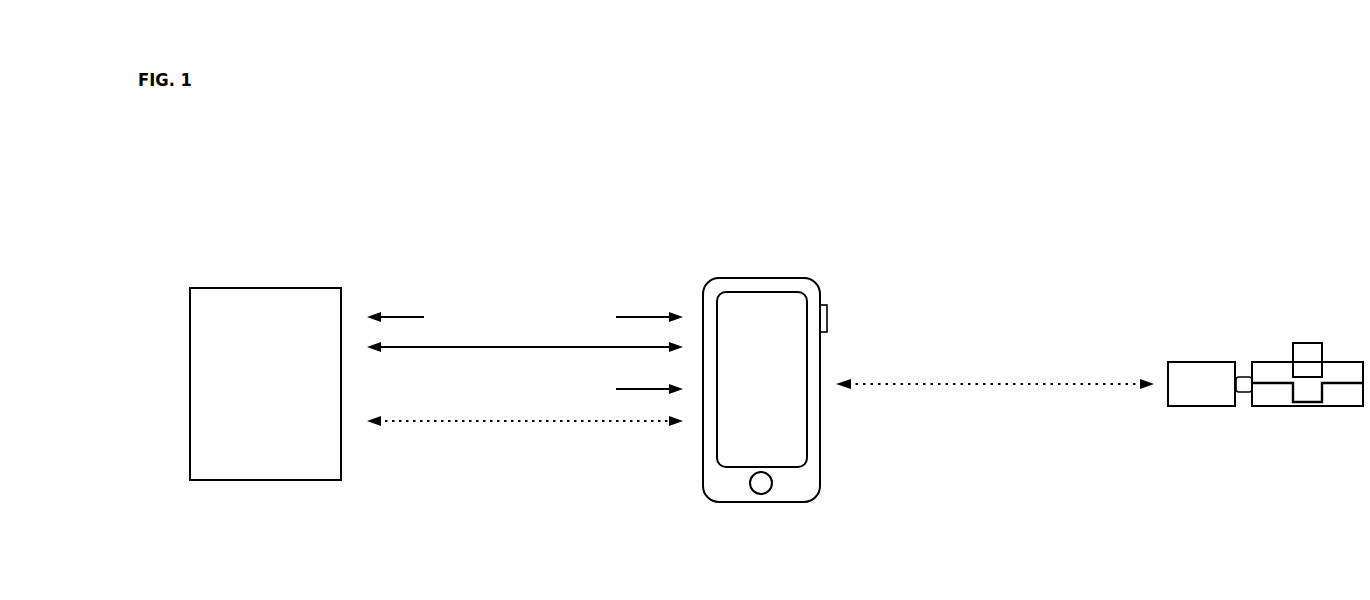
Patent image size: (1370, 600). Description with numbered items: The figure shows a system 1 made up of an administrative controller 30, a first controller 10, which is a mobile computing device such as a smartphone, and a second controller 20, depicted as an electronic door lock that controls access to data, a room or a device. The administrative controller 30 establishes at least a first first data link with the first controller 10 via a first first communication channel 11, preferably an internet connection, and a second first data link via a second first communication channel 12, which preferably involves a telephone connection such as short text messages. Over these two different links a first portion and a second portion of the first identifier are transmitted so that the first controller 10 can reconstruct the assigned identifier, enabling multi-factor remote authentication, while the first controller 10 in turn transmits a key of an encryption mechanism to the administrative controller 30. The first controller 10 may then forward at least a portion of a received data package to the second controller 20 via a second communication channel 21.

The system 1 is at (203, 207).
The first controller 10 is at (777, 397).
The first first communication channel 11 is at (525, 346).
The second first communication channel 12 is at (524, 424).
The second controller 20 is at (1203, 388).
The second communication channel 21 is at (994, 383).
The administrative controller 30 is at (282, 396).